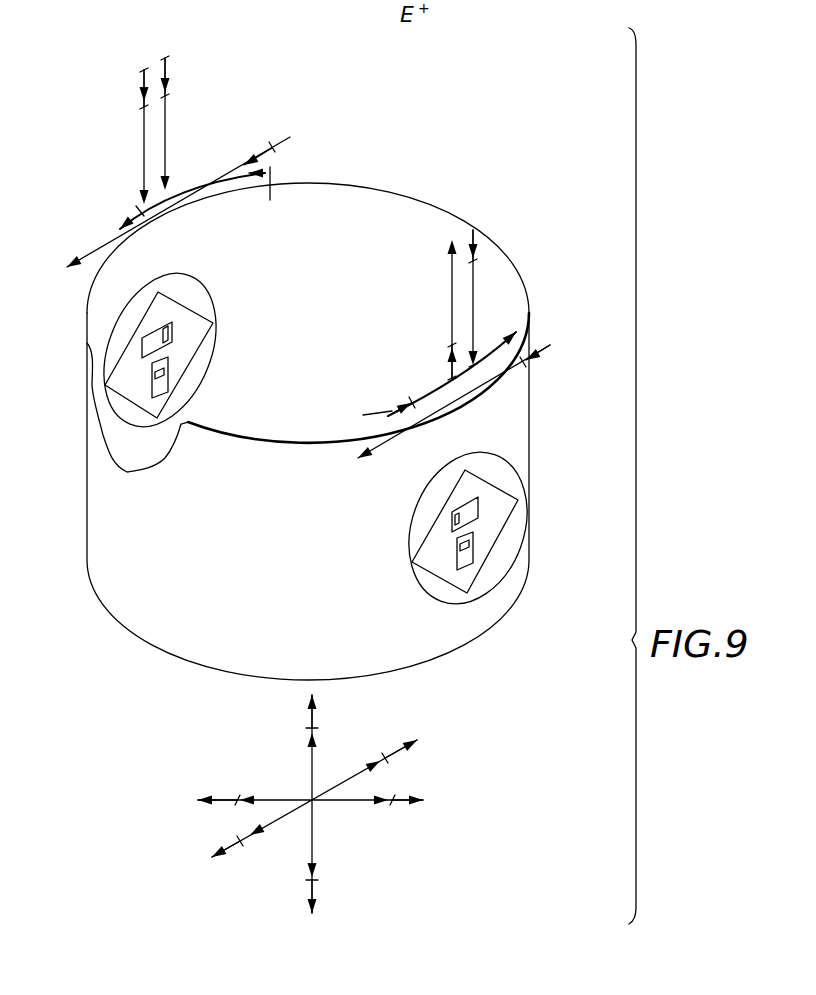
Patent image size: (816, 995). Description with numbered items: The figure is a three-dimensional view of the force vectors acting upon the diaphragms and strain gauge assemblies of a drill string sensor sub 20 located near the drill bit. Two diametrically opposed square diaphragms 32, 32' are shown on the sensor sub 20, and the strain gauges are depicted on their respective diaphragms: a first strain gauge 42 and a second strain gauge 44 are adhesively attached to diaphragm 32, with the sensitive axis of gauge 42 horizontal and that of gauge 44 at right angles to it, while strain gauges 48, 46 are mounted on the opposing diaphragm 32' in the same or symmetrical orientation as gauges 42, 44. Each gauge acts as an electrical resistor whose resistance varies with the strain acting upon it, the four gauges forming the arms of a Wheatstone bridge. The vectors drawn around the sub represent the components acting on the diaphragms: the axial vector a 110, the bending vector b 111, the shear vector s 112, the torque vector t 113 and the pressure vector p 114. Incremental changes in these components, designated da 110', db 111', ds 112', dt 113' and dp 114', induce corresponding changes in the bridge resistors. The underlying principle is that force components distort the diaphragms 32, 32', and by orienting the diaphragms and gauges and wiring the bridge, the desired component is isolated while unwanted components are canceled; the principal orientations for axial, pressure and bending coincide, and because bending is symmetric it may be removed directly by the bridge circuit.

The sensor sub 20 is at (97, 522).
The diaphragm 32 is at (180, 350).
The diaphragm 32' is at (492, 528).
The first strain gauge 42 is at (170, 332).
The second strain gauge 44 is at (163, 378).
The strain gauge 46 is at (468, 555).
The strain gauge 48 is at (472, 510).
The axial vector a 110 is at (361, 211).
The incremental axial change da 110' is at (337, 136).
The bending vector b 111 is at (274, 224).
The incremental bending change db 111' is at (264, 196).
The shear vector s 112 is at (338, 274).
The incremental shear change ds 112' is at (437, 236).
The torque vector t 113 is at (282, 289).
The incremental torque change dt 113' is at (330, 325).
The pressure vector p 114 is at (310, 804).
The incremental pressure change dp 114' is at (333, 800).